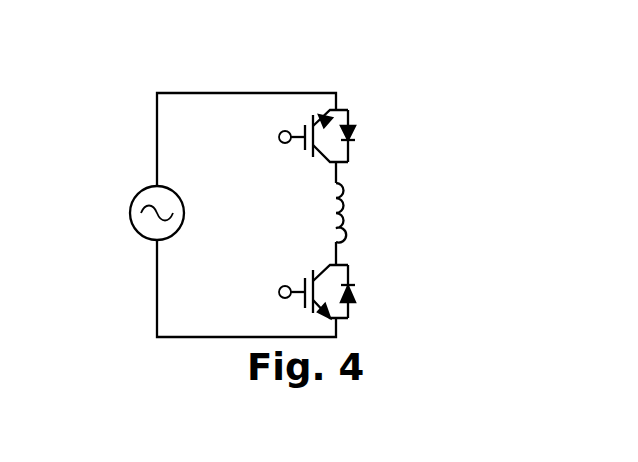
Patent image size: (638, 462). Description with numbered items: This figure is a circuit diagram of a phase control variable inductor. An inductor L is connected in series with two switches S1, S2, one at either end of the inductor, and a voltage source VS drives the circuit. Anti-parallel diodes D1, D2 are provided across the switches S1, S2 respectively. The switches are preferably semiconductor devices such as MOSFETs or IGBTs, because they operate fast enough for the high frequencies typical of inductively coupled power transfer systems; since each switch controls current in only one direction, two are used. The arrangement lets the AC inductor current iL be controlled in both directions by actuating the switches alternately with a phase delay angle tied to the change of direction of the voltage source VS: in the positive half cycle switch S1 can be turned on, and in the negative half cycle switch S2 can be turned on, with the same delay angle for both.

The switch S1 is at (296, 291).
The switch S2 is at (296, 136).
The anti-parallel diode D1 is at (357, 291).
The anti-parallel diode D2 is at (357, 138).
The inductor L is at (327, 212).
The AC inductor current iL is at (367, 188).
The voltage source VS is at (102, 163).